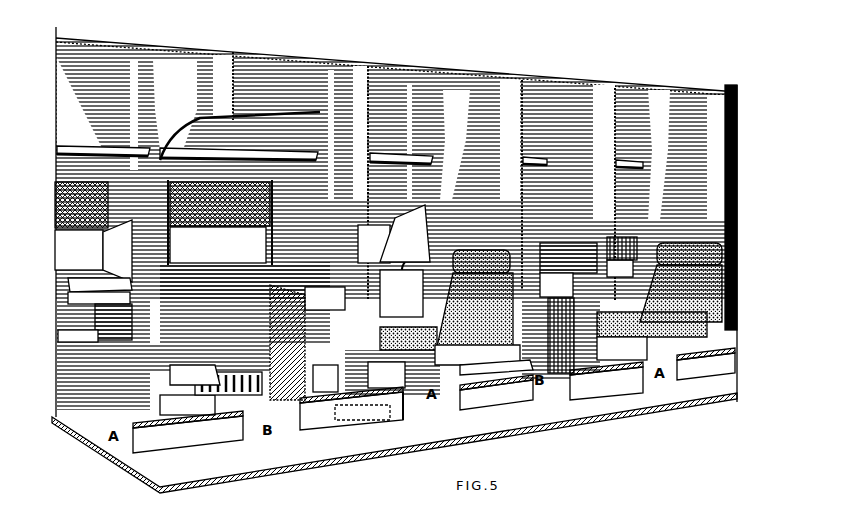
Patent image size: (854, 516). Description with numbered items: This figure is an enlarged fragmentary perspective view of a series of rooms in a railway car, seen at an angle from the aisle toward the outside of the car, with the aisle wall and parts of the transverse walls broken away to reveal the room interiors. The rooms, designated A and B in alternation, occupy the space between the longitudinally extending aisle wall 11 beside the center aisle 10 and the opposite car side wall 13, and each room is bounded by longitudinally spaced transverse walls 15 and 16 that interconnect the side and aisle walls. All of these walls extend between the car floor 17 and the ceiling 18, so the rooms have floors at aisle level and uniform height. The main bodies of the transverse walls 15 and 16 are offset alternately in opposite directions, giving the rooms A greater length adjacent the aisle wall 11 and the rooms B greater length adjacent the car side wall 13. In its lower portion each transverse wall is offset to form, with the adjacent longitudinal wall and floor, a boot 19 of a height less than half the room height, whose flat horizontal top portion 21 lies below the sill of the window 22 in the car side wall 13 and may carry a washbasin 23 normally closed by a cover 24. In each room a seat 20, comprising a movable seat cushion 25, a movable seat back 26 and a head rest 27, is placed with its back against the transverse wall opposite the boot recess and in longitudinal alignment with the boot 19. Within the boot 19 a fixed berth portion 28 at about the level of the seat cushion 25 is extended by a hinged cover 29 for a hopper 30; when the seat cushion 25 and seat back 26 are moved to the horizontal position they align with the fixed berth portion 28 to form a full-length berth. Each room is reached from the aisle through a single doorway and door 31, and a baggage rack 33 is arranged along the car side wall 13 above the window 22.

The center aisle 10 is at (558, 416).
The aisle wall 11 is at (345, 422).
The car side wall 13 is at (202, 275).
The transverse wall 15 is at (372, 68).
The transverse wall 16 is at (225, 56).
The car floor 17 is at (112, 442).
The ceiling 18 is at (288, 56).
The boot 19 is at (62, 446).
The seat 20 is at (248, 392).
The flat horizontal top portion 21 is at (62, 296).
The window 22 is at (270, 240).
The washbasin 23 is at (410, 275).
The cover 24 is at (125, 250).
The seat cushion 25 is at (688, 381).
The seat back 26 is at (500, 380).
The head rest 27 is at (497, 262).
The fixed berth portion 28 is at (62, 335).
The hinged cover 29 is at (287, 375).
The hopper 30 is at (291, 350).
The door 31 is at (414, 417).
The baggage rack 33 is at (84, 148).